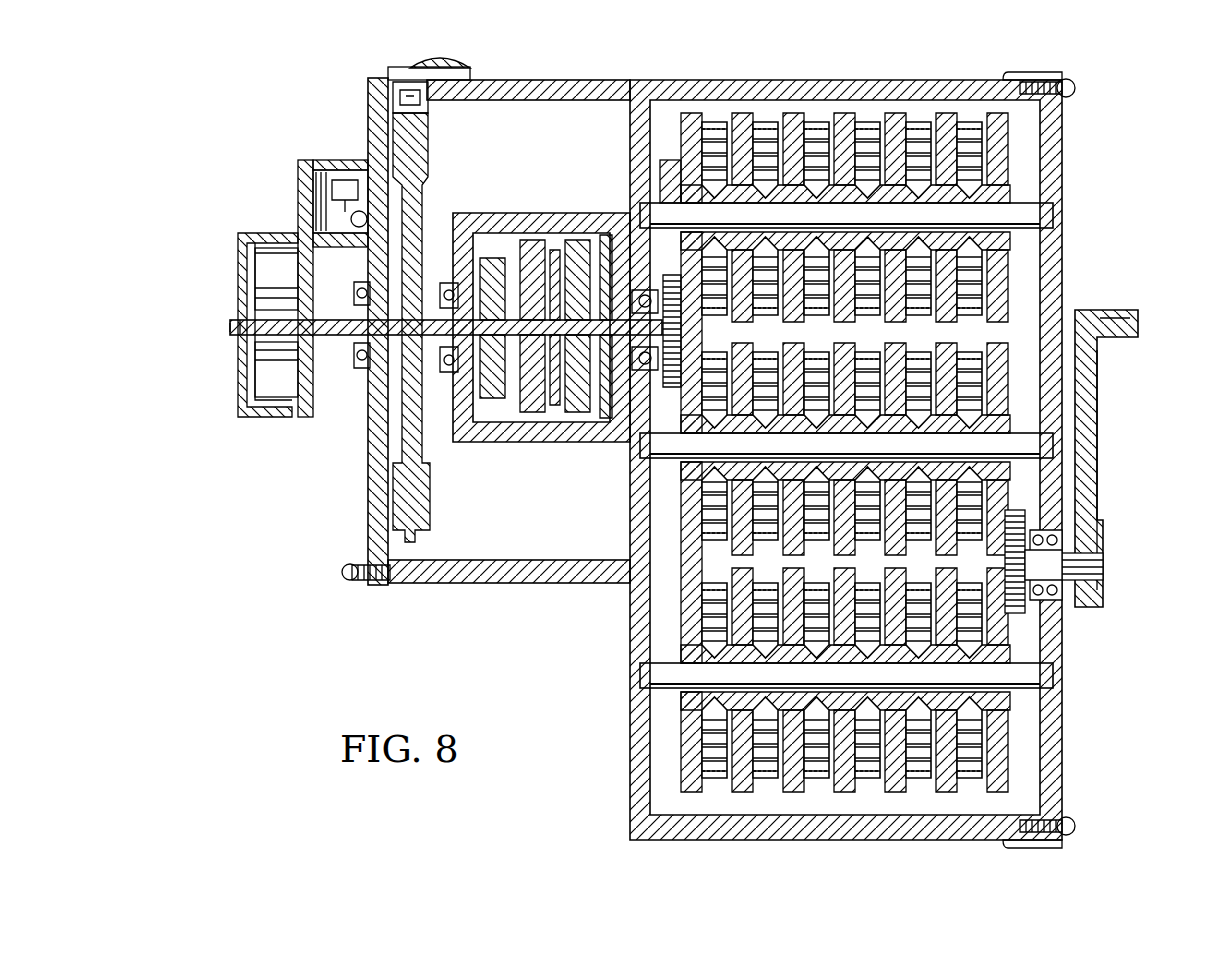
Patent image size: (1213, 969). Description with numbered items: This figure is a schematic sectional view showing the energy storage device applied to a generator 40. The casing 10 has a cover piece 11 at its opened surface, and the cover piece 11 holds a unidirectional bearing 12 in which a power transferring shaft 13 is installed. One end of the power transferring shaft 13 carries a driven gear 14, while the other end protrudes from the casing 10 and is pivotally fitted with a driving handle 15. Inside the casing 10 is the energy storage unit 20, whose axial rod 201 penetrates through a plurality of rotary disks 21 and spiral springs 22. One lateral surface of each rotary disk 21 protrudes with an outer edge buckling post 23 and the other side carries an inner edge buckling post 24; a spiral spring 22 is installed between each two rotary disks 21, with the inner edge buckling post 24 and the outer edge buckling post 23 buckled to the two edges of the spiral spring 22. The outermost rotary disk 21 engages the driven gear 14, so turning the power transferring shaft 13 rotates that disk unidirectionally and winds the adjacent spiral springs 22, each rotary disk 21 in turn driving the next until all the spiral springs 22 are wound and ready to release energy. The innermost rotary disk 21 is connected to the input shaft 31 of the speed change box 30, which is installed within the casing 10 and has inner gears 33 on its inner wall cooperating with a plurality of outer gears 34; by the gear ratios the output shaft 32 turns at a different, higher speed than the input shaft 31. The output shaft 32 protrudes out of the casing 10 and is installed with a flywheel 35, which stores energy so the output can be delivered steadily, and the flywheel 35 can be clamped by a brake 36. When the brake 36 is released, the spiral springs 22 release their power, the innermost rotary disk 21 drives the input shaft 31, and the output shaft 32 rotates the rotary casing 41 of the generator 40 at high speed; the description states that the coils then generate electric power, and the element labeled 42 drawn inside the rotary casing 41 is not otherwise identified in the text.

The casing 10 is at (838, 822).
The cover piece 11 is at (1052, 72).
The unidirectional bearing 12 is at (1050, 610).
The power transferring shaft 13 is at (1105, 560).
The driven gear 14 is at (1055, 655).
The driving handle 15 is at (1100, 385).
The energy storage unit 20 is at (791, 441).
The rotary disk 21 is at (693, 113).
The spiral spring 22 is at (862, 122).
The outer edge buckling post 23 is at (808, 125).
The inner edge buckling post 24 is at (718, 712).
The axial rod 201 is at (1050, 220).
The speed change box 30 is at (600, 225).
The input shaft 31 is at (618, 430).
The output shaft 32 is at (305, 365).
The inner gear 33 is at (498, 425).
The outer gear 34 is at (595, 230).
The flywheel 35 is at (428, 135).
The brake 36 is at (450, 52).
The generator 40 is at (262, 285).
The rotary casing 41 is at (260, 418).
The motor coil 42 is at (275, 272).